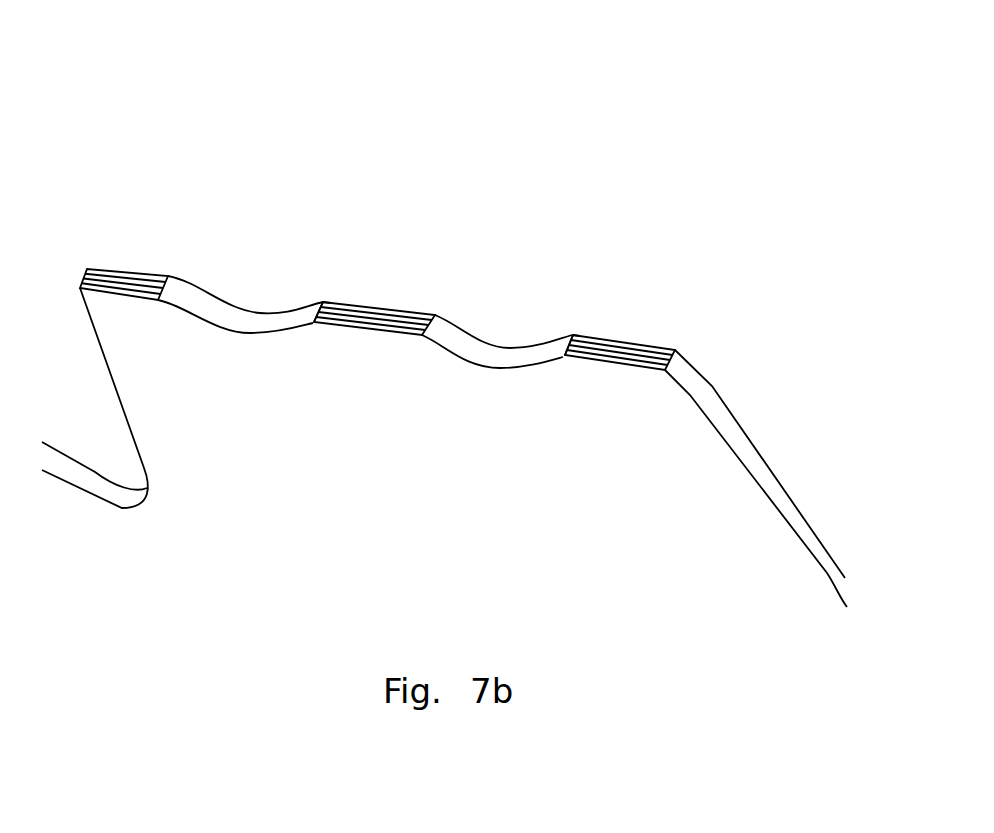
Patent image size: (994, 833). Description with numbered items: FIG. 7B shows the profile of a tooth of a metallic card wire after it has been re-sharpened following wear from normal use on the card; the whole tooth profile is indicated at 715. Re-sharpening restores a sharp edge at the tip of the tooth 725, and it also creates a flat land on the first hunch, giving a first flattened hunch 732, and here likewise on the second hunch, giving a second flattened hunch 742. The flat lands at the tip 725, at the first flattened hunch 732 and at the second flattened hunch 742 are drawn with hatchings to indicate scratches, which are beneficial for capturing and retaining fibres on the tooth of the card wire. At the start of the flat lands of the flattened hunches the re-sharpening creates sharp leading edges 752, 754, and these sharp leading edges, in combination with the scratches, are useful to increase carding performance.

The flexible strip 715 is at (717, 142).
The tip of the tooth 725 is at (85, 278).
The first flattened hunch 732 is at (378, 300).
The second flattened hunch 742 is at (619, 332).
The sharp leading edge 752 is at (325, 301).
The sharp leading edge 754 is at (572, 334).